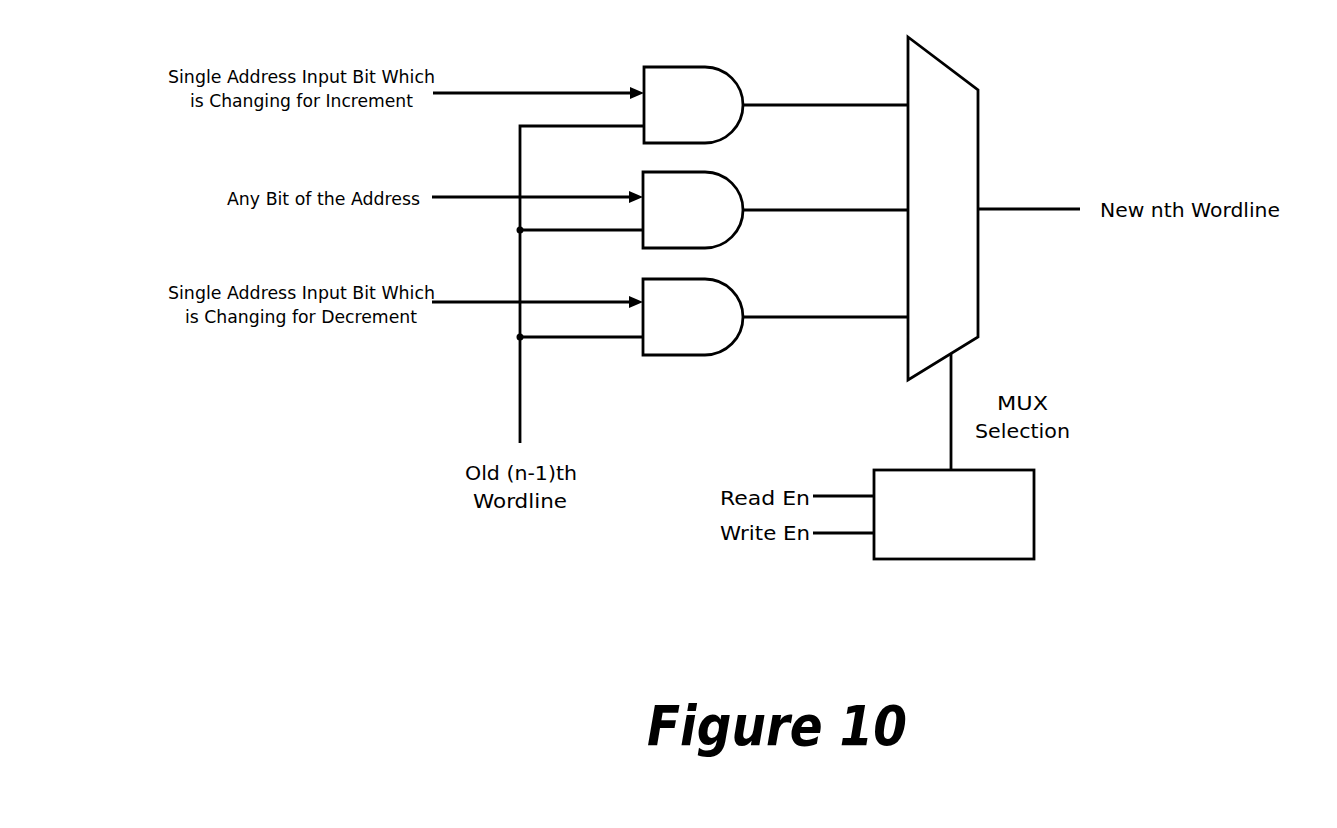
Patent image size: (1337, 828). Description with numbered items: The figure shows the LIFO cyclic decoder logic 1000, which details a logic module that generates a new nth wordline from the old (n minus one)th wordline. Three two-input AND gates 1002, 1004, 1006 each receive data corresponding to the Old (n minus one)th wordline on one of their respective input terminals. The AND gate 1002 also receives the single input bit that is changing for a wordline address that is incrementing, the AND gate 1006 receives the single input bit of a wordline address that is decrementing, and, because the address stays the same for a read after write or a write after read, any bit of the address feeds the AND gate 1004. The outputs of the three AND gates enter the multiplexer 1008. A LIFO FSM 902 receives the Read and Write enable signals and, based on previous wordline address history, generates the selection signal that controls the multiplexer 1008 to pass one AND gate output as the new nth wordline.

The AND gate 1002 is at (693, 105).
The AND gate 1004 is at (693, 210).
The AND gate 1006 is at (693, 317).
The multiplexer 1008 is at (943, 253).
The LIFO FSM 902 is at (954, 514).
The wordline selection circuit 1000 is at (1134, 620).